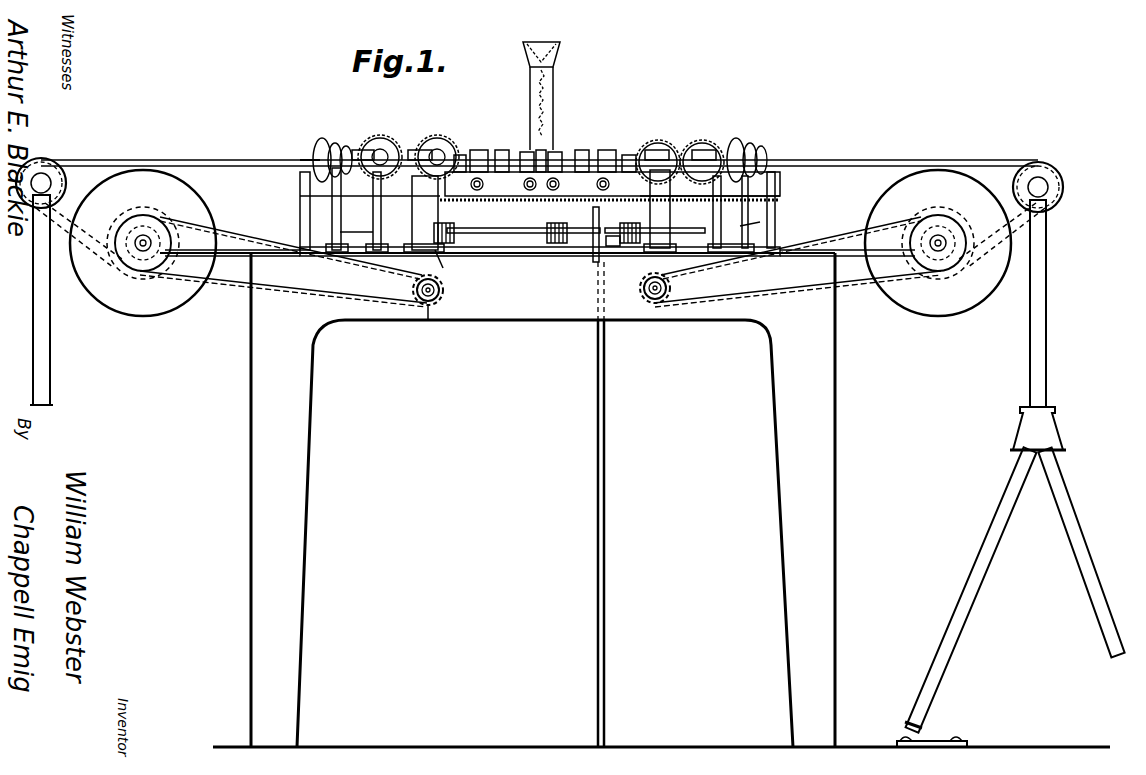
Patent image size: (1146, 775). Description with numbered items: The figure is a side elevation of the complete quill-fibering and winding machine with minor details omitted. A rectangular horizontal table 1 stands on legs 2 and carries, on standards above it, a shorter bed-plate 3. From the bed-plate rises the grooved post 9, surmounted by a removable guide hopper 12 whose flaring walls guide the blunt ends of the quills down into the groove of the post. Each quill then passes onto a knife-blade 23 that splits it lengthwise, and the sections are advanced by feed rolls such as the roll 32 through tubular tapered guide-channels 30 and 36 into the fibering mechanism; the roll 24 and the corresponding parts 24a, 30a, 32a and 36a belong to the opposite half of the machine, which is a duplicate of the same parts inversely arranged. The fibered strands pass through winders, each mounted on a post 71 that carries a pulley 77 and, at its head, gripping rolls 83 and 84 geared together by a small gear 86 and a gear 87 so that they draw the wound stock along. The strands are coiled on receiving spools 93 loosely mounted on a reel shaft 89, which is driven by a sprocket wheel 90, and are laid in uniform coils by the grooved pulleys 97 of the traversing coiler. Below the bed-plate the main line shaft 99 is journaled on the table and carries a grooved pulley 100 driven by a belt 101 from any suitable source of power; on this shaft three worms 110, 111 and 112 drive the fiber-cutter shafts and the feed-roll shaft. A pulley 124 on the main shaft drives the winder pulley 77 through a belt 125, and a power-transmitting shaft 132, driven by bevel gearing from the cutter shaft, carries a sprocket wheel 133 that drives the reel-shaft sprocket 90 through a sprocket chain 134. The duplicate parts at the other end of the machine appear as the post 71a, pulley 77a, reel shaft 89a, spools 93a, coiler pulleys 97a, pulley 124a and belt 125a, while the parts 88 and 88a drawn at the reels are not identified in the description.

The table 1 is at (614, 244).
The legs 2 is at (497, 500).
The bed-plate 3 is at (610, 186).
The post 9 is at (554, 85).
The guide hopper 12 is at (560, 50).
The knife-blade 23 is at (538, 150).
The guide block 24 is at (527, 152).
The guide block 24a is at (556, 152).
The tubular tapered guide-channel 30 is at (494, 158).
The clamp block 30a is at (584, 155).
The feed roll 32 is at (478, 150).
The clamp jaw 32a is at (607, 150).
The tubular tapered guide-channel 36 is at (460, 155).
The spring 36a is at (628, 155).
The post 71 is at (404, 209).
The lever 71a is at (706, 212).
The pulley 77 is at (322, 143).
The pulley 77a is at (752, 145).
The gripping roll 83 is at (396, 140).
The gripping roll 84 is at (441, 150).
The small gear 86 is at (410, 148).
The gear 87 is at (432, 138).
The shaft 88 is at (234, 258).
The shaft 88a is at (850, 258).
The reel shaft 89 is at (128, 262).
The belt 89a is at (950, 262).
The sprocket wheel 90 is at (118, 228).
The receiving spools 93 is at (196, 190).
The spool wheel 93a is at (892, 186).
The grooved pulleys 97 is at (60, 187).
The guide pulley 97a is at (1020, 183).
The main line shaft 99 is at (522, 238).
The grooved pulley 100 is at (592, 248).
The belt 101 is at (605, 506).
The worm 110 is at (452, 265).
The worm 111 is at (640, 250).
The worm 112 is at (558, 243).
The pulley 124 is at (340, 232).
The standard 124a is at (760, 222).
The belt 125 is at (332, 200).
The standard 125a is at (772, 202).
The power-transmitting shaft 132 is at (444, 295).
The sprocket wheel 133 is at (425, 318).
The sprocket chain 134 is at (295, 290).